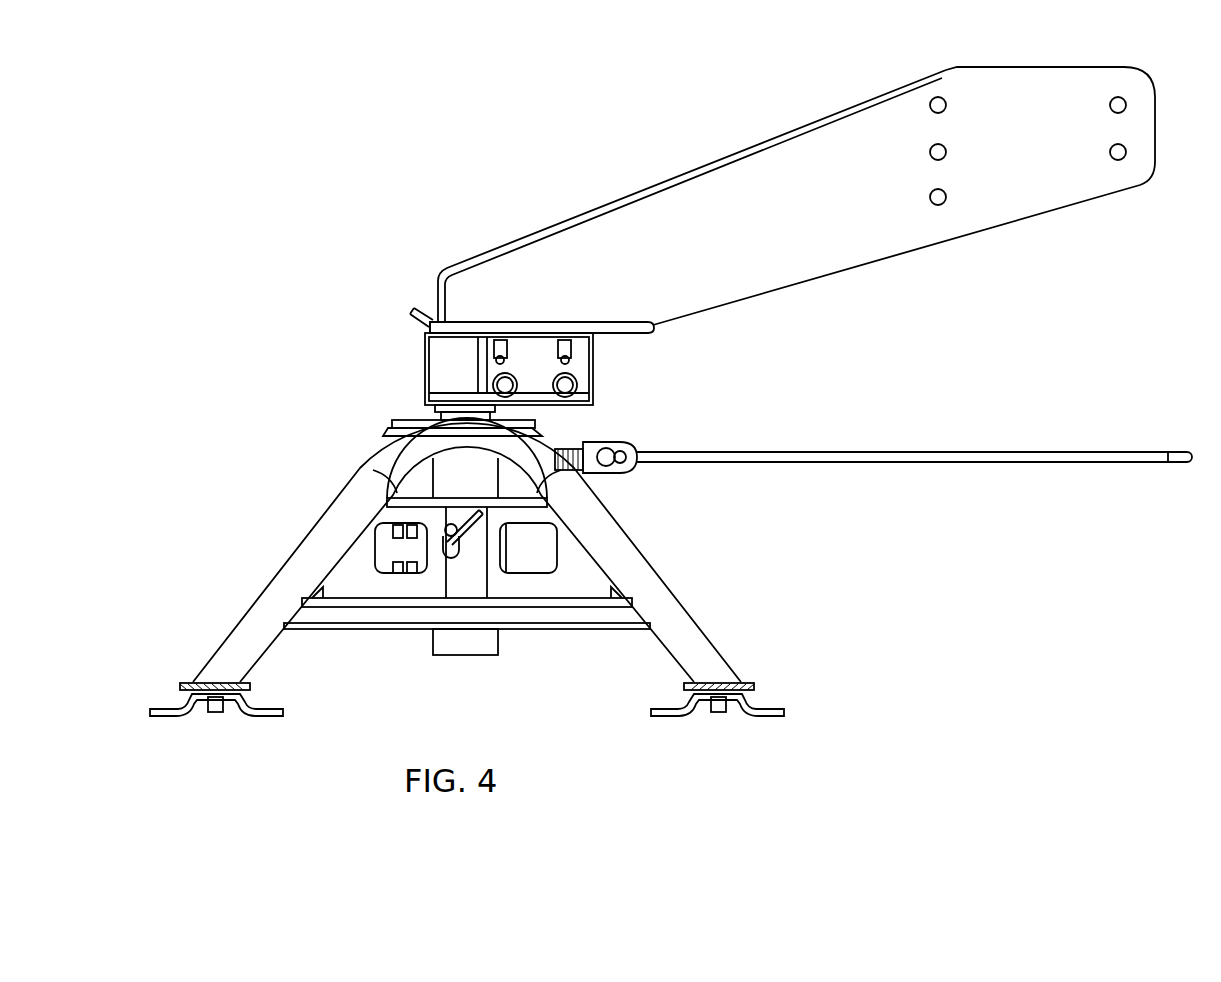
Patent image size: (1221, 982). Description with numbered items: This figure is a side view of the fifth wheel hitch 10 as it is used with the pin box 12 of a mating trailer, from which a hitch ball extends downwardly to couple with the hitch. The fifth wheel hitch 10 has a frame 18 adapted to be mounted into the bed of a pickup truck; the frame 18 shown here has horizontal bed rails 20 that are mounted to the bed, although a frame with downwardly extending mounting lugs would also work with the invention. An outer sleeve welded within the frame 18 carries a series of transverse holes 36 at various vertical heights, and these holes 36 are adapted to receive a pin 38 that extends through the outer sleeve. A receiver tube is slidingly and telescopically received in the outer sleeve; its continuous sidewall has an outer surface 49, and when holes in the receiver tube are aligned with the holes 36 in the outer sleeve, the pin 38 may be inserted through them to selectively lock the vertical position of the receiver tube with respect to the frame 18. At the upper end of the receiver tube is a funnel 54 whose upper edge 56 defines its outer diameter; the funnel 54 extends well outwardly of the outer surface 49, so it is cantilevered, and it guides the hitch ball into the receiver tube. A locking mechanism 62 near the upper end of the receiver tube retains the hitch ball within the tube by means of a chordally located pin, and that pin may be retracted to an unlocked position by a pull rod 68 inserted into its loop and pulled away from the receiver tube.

The fifth wheel hitch 10 is at (872, 571).
The pin box 12 is at (441, 358).
The frame 18 is at (283, 594).
The horizontal bed rails 20 is at (283, 713).
The transverse holes 36 is at (482, 508).
The pin 38 is at (437, 520).
The outer surface 49 is at (467, 482).
The funnel 54 is at (400, 433).
The upper edge 56 is at (396, 424).
The locking mechanism 62 is at (582, 431).
The pull rod 68 is at (902, 452).